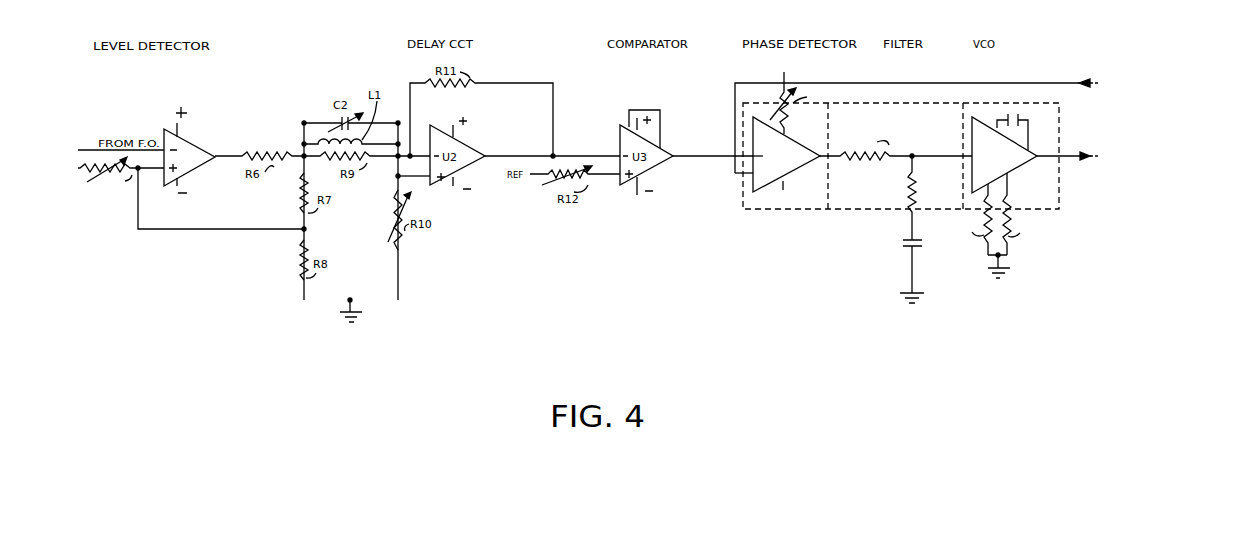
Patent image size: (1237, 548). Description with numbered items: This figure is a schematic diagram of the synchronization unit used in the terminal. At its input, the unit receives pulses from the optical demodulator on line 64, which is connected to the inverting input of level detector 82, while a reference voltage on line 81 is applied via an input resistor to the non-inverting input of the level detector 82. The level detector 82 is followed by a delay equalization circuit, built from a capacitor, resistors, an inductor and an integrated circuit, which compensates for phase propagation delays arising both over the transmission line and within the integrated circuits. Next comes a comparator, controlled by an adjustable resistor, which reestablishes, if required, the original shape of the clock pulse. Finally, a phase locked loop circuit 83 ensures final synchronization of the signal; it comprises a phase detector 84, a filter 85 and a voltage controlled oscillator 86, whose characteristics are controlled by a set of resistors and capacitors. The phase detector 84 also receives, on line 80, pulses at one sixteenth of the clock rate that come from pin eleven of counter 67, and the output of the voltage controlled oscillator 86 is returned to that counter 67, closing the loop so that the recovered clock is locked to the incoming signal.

The line 64 is at (137, 143).
The line 81 is at (81, 171).
The level detector 82 is at (208, 147).
The line 80 is at (1037, 75).
The phase detector 84 is at (760, 212).
The filter 85 is at (896, 220).
The phase locked loop circuit 83 is at (911, 257).
The voltage controlled oscillator 86 is at (1048, 212).
The counter 67 is at (1107, 163).